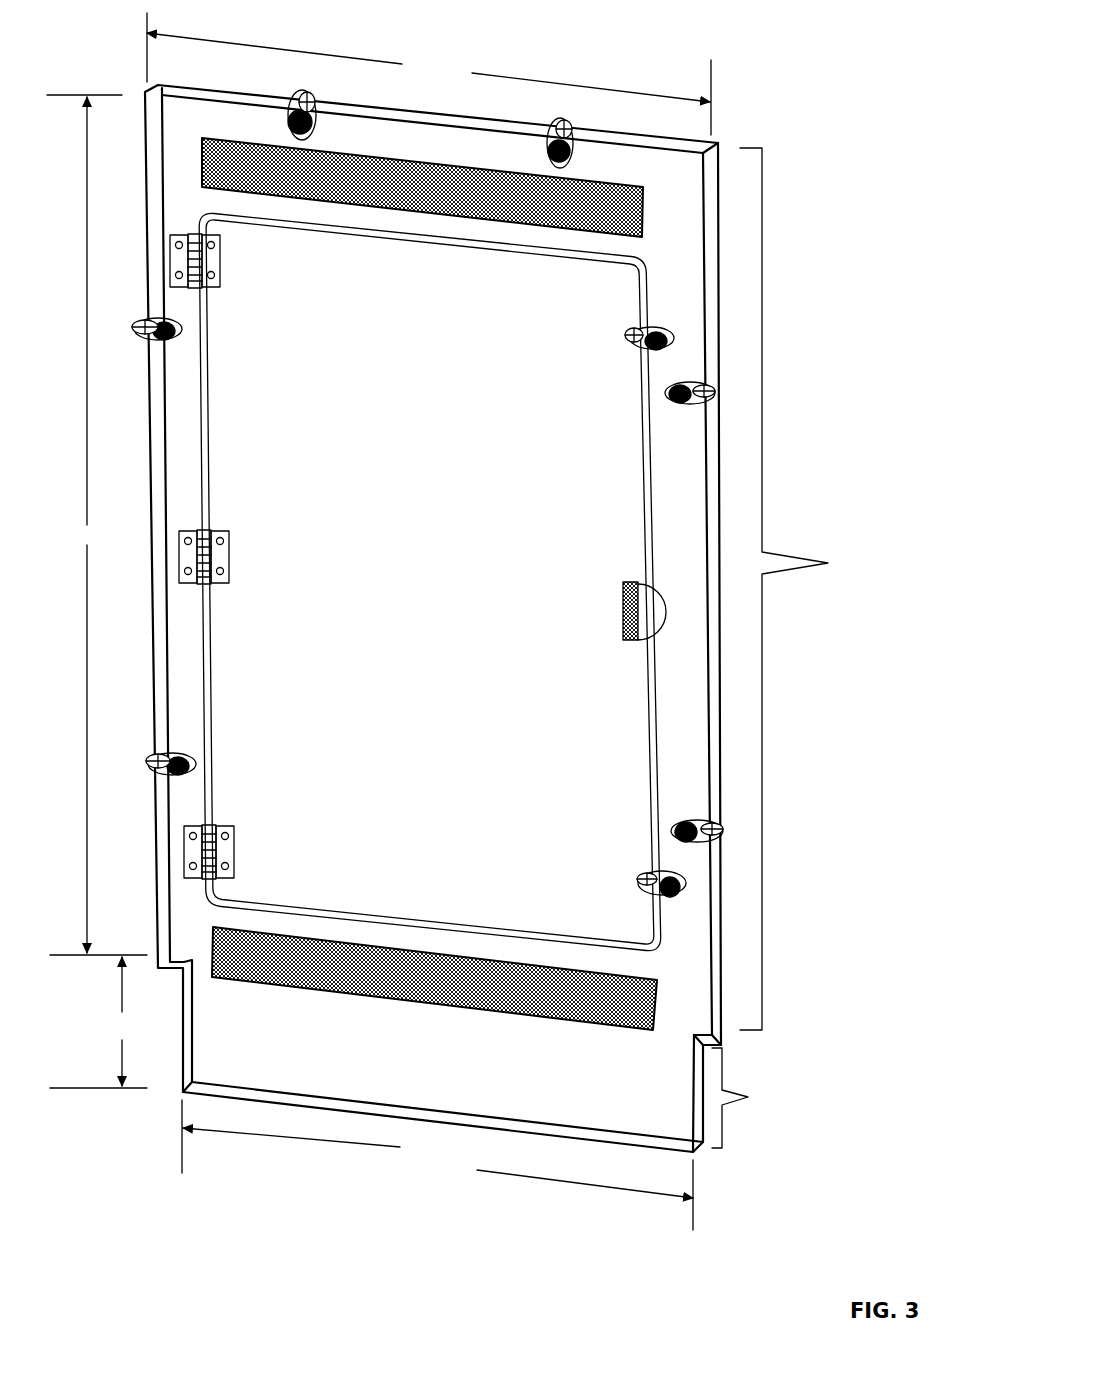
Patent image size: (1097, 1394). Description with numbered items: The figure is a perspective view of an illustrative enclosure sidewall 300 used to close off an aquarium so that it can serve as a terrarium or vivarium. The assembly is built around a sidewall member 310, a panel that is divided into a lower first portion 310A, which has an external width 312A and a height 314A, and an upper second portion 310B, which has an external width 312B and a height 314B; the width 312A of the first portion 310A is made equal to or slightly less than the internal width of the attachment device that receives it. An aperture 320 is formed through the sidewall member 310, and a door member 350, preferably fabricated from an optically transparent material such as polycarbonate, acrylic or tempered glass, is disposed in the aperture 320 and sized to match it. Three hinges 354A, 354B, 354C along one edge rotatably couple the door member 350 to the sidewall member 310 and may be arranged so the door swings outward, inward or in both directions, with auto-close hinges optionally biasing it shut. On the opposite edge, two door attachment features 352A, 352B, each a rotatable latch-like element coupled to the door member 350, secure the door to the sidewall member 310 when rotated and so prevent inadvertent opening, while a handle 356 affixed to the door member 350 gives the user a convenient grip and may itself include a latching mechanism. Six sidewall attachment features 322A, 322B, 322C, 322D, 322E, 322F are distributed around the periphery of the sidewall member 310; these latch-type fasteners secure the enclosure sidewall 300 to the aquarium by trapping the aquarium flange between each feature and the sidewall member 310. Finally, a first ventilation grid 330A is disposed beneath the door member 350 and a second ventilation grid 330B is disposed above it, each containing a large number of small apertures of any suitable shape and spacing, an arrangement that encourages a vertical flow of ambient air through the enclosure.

The enclosure sidewall 300 is at (873, 26).
The sidewall member 310 is at (178, 1094).
The first portion 310A is at (766, 1098).
The second portion 310B is at (816, 589).
The external width 312A is at (437, 1165).
The external width 312B is at (429, 74).
The height 314A is at (101, 1022).
The height 314B is at (97, 525).
The aperture 320 is at (661, 958).
The sidewall attachment feature 322A is at (192, 762).
The sidewall attachment feature 322B is at (182, 330).
The sidewall attachment feature 322C is at (300, 92).
The sidewall attachment feature 322D is at (563, 122).
The sidewall attachment feature 322E is at (668, 395).
The sidewall attachment feature 322F is at (672, 828).
The ventilation grid 330A is at (222, 982).
The ventilation grid 330B is at (645, 200).
The door member 350 is at (427, 638).
The door attachment feature 352A is at (625, 337).
The door attachment feature 352B is at (637, 880).
The hinge 354A is at (235, 855).
The hinge 354B is at (230, 555).
The hinge 354C is at (221, 272).
The handle 356 is at (622, 605).